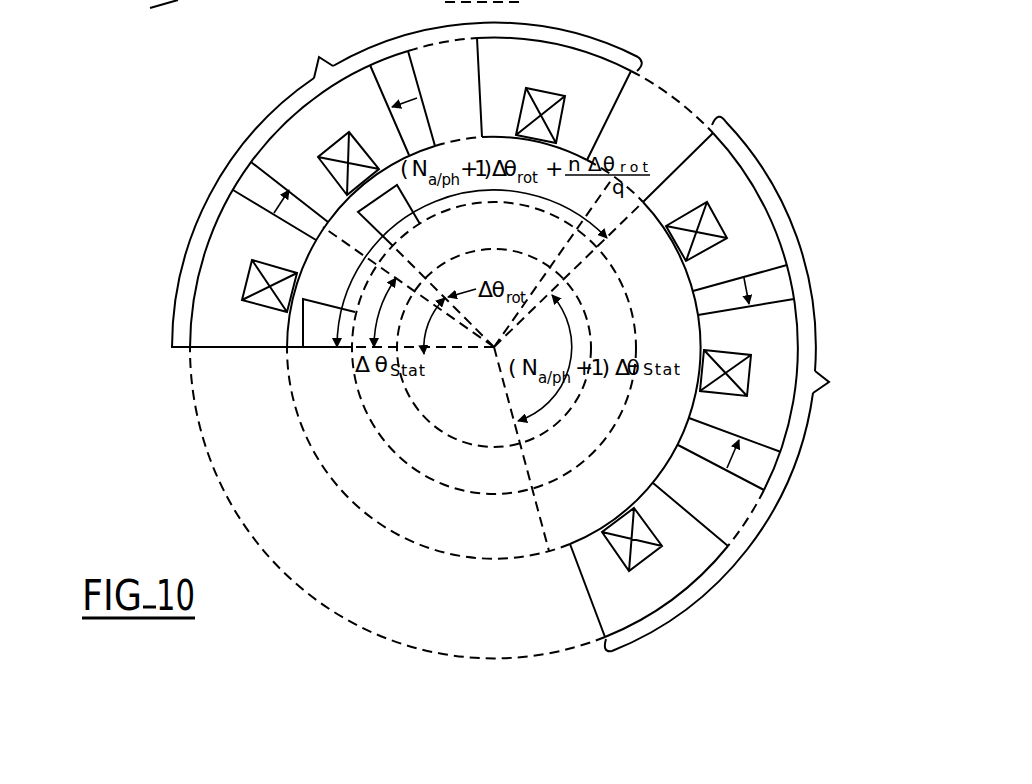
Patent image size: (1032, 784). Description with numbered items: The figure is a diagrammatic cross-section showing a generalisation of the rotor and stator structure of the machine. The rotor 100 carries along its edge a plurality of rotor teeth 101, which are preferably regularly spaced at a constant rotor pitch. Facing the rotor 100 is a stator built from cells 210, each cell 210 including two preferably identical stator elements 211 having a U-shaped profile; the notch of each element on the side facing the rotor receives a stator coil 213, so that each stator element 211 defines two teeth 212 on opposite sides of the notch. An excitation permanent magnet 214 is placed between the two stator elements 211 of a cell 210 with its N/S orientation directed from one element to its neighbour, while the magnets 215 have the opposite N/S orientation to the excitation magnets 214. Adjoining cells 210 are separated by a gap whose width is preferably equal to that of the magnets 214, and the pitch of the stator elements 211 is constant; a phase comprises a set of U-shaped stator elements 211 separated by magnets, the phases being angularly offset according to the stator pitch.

The rotor 100 is at (353, 396).
The rotor teeth 101 is at (322, 327).
The cell 210 is at (523, 341).
The stator element 211 is at (222, 330).
The teeth 212 is at (296, 264).
The stator coil 213 is at (250, 278).
The excitation permanent magnet 214 is at (252, 186).
The magnet 215 is at (393, 68).